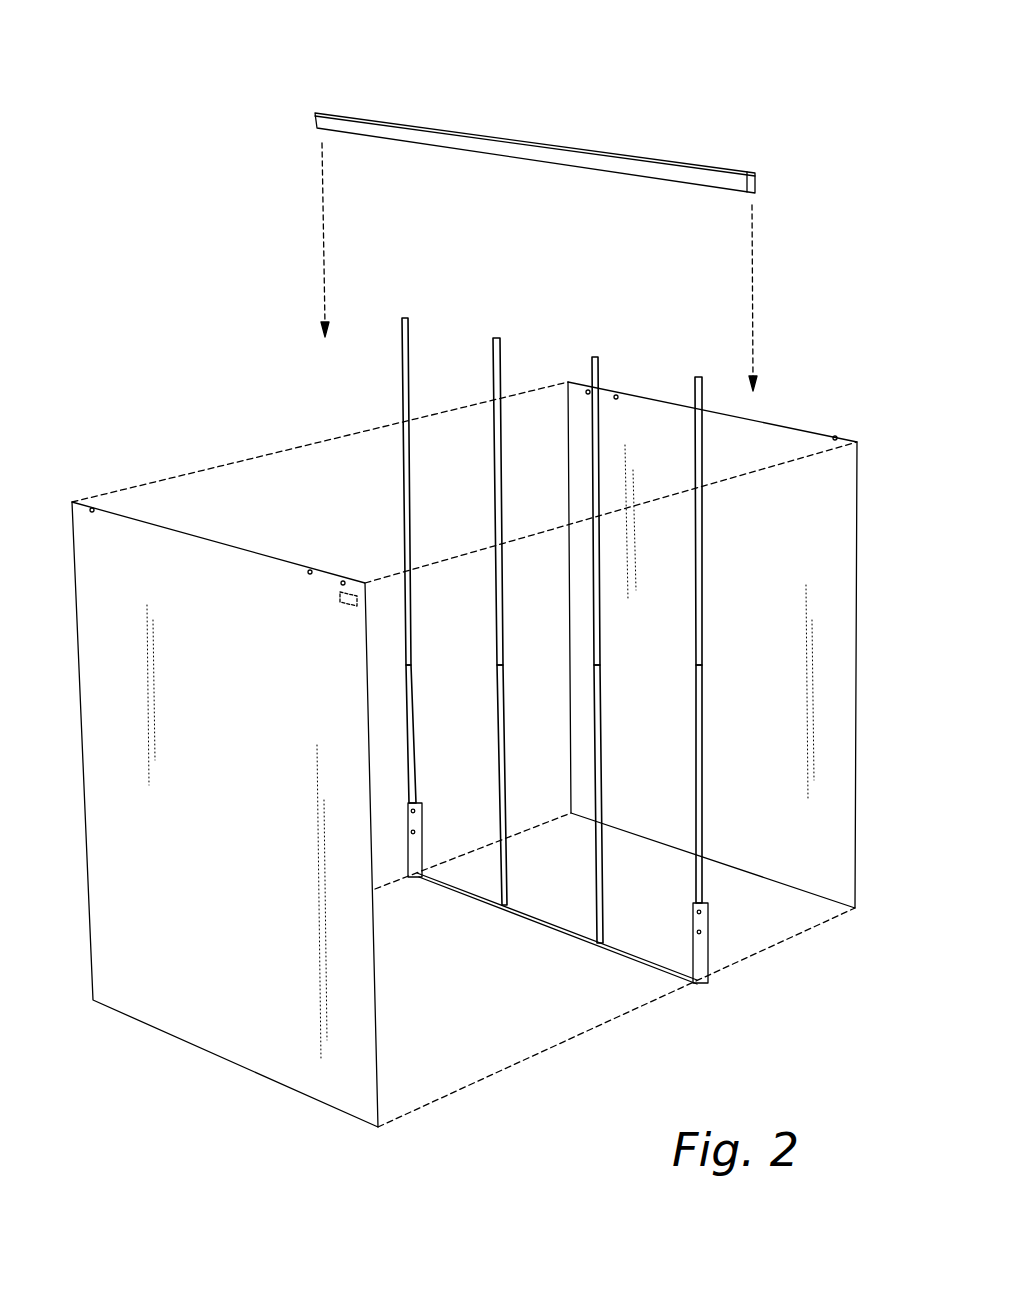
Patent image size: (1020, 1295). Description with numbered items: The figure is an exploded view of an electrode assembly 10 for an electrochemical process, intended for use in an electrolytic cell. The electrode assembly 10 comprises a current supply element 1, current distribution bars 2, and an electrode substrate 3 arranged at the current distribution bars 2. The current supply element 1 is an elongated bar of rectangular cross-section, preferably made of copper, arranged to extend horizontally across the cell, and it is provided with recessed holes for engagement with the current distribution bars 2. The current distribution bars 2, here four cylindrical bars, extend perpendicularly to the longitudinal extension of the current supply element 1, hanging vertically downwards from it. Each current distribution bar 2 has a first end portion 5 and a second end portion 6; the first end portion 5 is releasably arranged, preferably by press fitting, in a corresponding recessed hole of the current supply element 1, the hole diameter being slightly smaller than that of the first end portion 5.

The electrode assembly 10 is at (716, 94).
The current supply element 1 is at (697, 172).
The current distribution bar 2 is at (400, 388).
The electrode substrate 3 is at (137, 810).
The first end portion 5 is at (402, 330).
The second end portion 6 is at (417, 763).